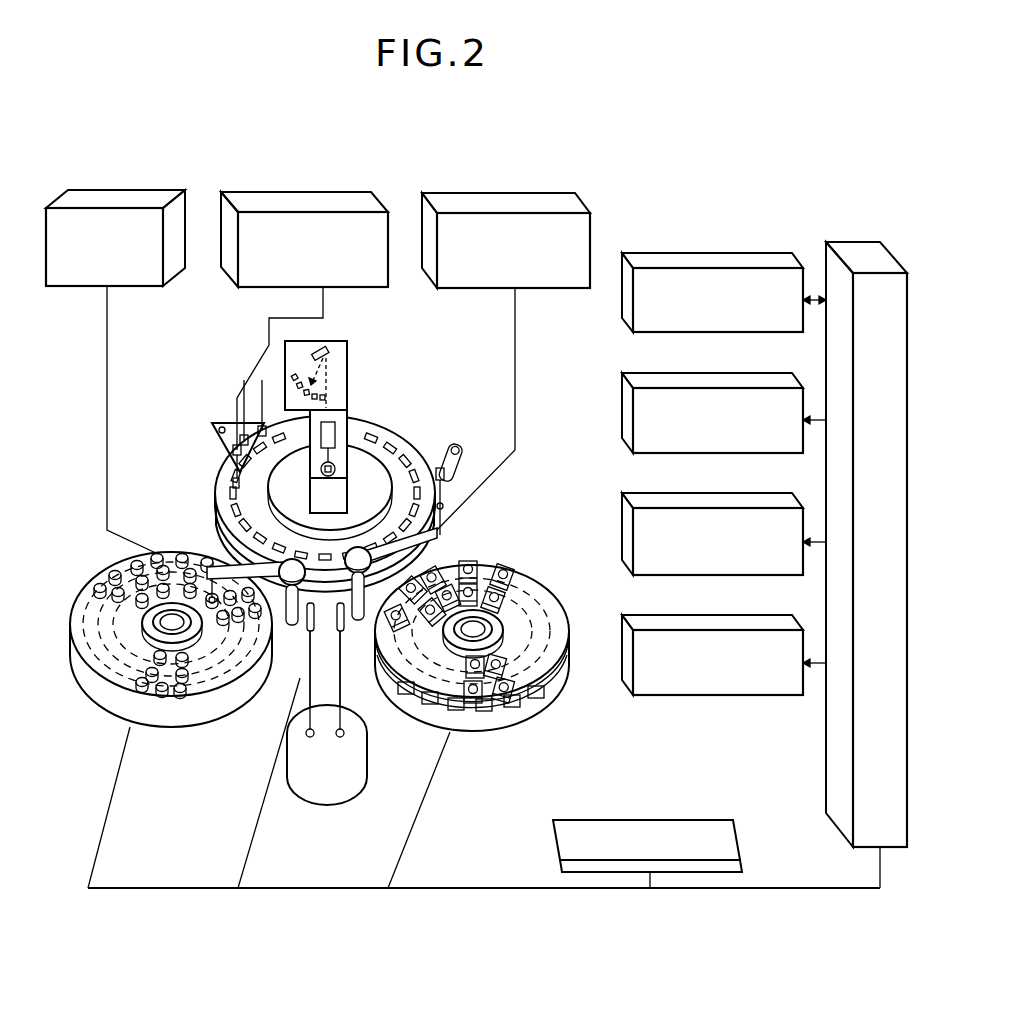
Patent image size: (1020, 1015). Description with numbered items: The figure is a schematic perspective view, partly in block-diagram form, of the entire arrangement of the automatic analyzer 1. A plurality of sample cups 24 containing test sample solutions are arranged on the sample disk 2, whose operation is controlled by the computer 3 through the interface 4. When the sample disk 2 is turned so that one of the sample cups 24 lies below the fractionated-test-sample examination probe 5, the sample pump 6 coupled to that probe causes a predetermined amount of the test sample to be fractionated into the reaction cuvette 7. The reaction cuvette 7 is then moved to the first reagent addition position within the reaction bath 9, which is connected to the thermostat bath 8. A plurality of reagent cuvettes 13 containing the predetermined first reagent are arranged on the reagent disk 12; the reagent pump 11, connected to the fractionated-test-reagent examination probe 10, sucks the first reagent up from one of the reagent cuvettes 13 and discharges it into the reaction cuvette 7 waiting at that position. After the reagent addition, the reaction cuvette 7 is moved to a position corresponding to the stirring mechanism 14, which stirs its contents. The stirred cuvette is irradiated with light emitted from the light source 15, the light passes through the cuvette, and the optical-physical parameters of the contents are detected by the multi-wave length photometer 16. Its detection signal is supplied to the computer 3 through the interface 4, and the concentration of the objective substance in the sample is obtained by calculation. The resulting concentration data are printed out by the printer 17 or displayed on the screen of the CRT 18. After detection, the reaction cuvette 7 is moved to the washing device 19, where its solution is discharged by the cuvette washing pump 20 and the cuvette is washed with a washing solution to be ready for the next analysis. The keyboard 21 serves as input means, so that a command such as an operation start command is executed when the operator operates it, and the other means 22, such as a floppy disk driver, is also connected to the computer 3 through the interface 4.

The automatic analyzer 1 is at (641, 151).
The sample disk 2 is at (122, 724).
The computer 3 is at (676, 252).
The interface 4 is at (840, 242).
The fractionated-test-sample examination probe 5 is at (292, 624).
The sample pump 6 is at (155, 190).
The reaction cuvette 7 is at (330, 410).
The thermostat bath 8 is at (368, 752).
The reaction bath 9 is at (375, 440).
The fractionated-test-reagent examination probe 10 is at (437, 538).
The reagent pump 11 is at (540, 193).
The reagent disk 12 is at (545, 592).
The reagent cuvettes 13 is at (503, 573).
The stirring mechanism 14 is at (455, 444).
The light source 15 is at (336, 502).
The multi-wave length photometer 16 is at (347, 364).
The printer 17 is at (658, 373).
The CRT 18 is at (658, 493).
The washing device 19 is at (211, 425).
The cuvette washing pump 20 is at (338, 192).
The keyboard 21 is at (702, 820).
The other means 22 is at (660, 615).
The sample cups 24 is at (180, 551).